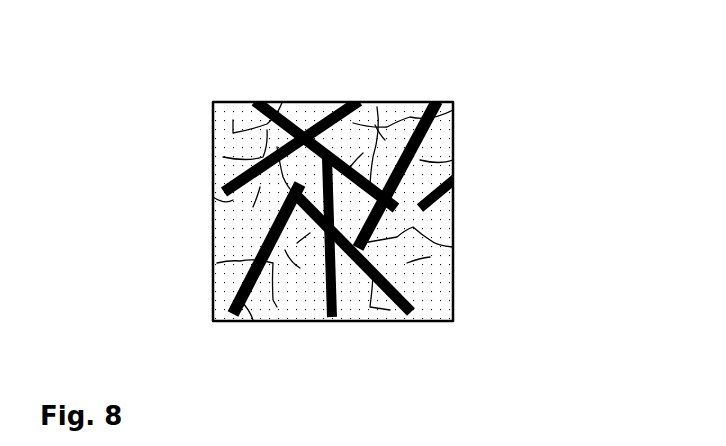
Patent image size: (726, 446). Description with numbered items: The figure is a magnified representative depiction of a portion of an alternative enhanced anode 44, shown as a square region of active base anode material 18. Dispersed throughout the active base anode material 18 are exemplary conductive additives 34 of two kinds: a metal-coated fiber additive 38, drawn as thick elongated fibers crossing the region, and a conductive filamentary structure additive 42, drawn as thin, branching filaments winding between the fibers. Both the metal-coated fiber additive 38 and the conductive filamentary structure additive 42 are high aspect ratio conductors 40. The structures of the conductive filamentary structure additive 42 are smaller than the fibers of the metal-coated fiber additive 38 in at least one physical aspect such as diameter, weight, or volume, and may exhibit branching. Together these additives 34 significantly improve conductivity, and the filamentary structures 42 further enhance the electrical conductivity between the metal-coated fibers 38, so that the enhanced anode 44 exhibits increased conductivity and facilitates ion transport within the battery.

The active base anode material 18 is at (235, 121).
The conductive additives 34 is at (246, 247).
The metal-coated fiber additive 38 is at (444, 189).
The high aspect ratio conductors 40 is at (444, 167).
The conductive filamentary structure additive 42 is at (306, 112).
The enhanced anode 44 is at (463, 128).